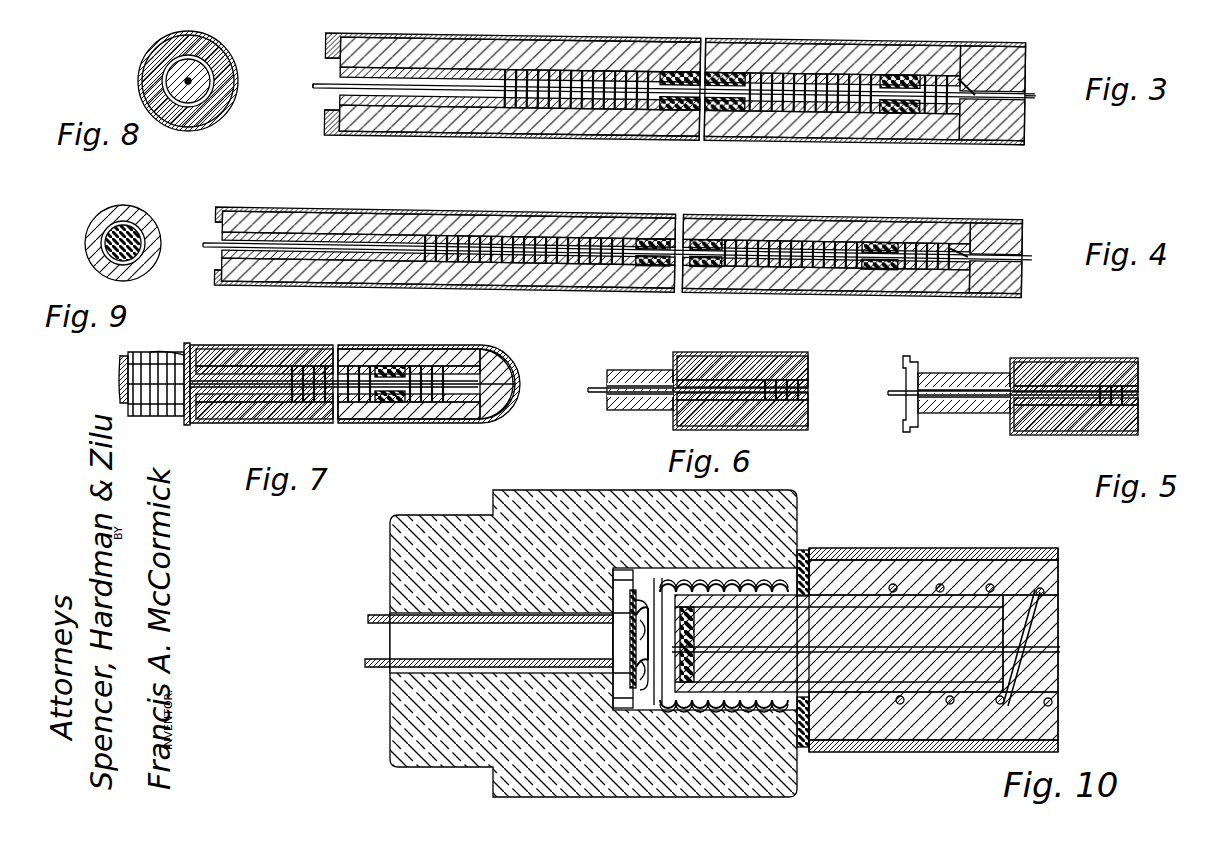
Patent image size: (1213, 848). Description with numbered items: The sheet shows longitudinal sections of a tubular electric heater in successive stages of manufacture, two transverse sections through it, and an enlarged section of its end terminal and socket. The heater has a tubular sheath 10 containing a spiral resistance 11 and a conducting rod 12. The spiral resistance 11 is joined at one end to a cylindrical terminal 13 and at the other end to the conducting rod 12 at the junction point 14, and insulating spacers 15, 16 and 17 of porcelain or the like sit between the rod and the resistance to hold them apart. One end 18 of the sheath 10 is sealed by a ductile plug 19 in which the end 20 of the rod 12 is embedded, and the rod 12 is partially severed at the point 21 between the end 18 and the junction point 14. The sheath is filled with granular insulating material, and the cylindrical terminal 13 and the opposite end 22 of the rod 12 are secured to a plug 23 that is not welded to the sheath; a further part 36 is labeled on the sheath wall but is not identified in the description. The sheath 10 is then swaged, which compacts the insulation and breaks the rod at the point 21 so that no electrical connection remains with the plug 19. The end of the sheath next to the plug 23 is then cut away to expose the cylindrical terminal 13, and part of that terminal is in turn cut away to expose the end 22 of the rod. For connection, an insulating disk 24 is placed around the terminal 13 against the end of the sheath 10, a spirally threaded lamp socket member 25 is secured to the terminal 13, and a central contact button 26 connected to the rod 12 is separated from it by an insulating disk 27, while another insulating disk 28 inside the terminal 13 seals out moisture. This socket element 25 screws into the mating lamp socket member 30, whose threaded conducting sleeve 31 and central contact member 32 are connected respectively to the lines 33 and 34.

In FIG. 3, the tubular sheath 10 is at (790, 136).
In FIG. 4, the tubular sheath 10 is at (590, 288).
In FIG. 7, the tubular sheath 10 is at (200, 348).
In FIG. 6, the tubular sheath 10 is at (656, 385).
In FIG. 5, the tubular sheath 10 is at (1042, 362).
In FIG. 10, the tubular sheath 10 is at (866, 650).
In FIG. 3, the spiral resistance 11 is at (797, 108).
In FIG. 3, the conducting rod 12 is at (570, 92).
In FIG. 6, the conducting rod 12 is at (600, 388).
In FIG. 5, the conducting rod 12 is at (978, 390).
In FIG. 10, the conducting rod 12 is at (1060, 650).
In FIG. 3, the cylindrical terminal 13 is at (490, 70).
In FIG. 6, the cylindrical terminal 13 is at (633, 412).
In FIG. 5, the cylindrical terminal 13 is at (966, 414).
In FIG. 3, the junction point 14 is at (962, 76).
In FIG. 4, the junction point 14 is at (940, 258).
In FIG. 3, the insulating spacer 15 is at (675, 67).
In FIG. 3, the insulating spacer 16 is at (725, 75).
In FIG. 3, the insulating spacer 17 is at (885, 75).
In FIG. 3, the sheath end 18 is at (1004, 140).
In FIG. 3, the ductile plug 19 is at (1027, 58).
In FIG. 4, the ductile plug 19 is at (1024, 270).
In FIG. 3, the rod end 20 is at (1036, 88).
In FIG. 3, the severing point 21 is at (966, 96).
In FIG. 3, the rod end 22 is at (340, 80).
In FIG. 3, the plug 23 is at (325, 126).
In FIG. 5, the plug 23 is at (903, 422).
In FIG. 7, the insulating disk 24 is at (189, 418).
In FIG. 10, the insulating disk 24 is at (808, 548).
In FIG. 7, the spirally threaded lamp socket member 25 is at (162, 410).
In FIG. 7, the central contact button 26 is at (120, 379).
In FIG. 10, the insulating disk 27 is at (660, 576).
In FIG. 10, the insulating disk 28 is at (716, 578).
In FIG. 10, the lamp socket member 30 is at (540, 500).
In FIG. 10, the threaded conducting sleeve 31 is at (760, 716).
In FIG. 10, the central contact member 32 is at (650, 702).
In FIG. 10, the line 33 is at (368, 618).
In FIG. 10, the line 34 is at (365, 663).
In FIG. 3, the outer sheath 36 is at (372, 136).